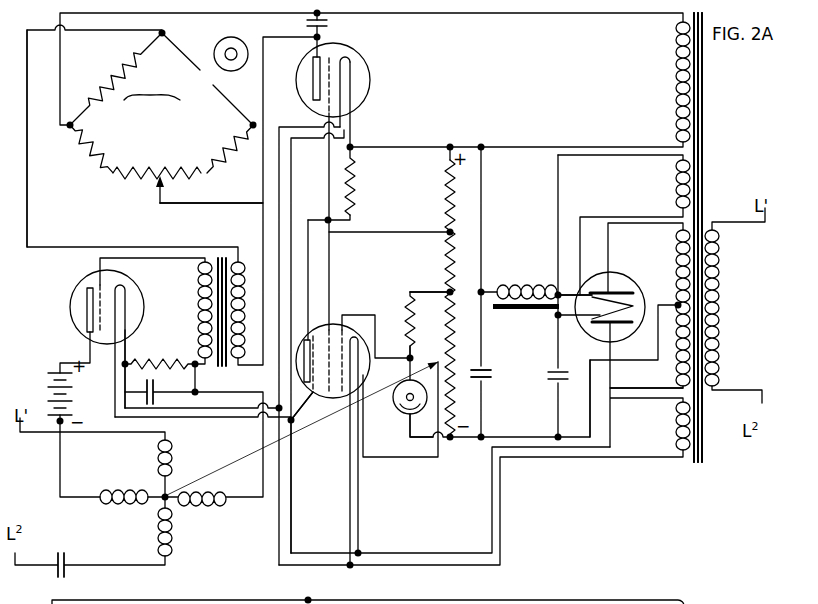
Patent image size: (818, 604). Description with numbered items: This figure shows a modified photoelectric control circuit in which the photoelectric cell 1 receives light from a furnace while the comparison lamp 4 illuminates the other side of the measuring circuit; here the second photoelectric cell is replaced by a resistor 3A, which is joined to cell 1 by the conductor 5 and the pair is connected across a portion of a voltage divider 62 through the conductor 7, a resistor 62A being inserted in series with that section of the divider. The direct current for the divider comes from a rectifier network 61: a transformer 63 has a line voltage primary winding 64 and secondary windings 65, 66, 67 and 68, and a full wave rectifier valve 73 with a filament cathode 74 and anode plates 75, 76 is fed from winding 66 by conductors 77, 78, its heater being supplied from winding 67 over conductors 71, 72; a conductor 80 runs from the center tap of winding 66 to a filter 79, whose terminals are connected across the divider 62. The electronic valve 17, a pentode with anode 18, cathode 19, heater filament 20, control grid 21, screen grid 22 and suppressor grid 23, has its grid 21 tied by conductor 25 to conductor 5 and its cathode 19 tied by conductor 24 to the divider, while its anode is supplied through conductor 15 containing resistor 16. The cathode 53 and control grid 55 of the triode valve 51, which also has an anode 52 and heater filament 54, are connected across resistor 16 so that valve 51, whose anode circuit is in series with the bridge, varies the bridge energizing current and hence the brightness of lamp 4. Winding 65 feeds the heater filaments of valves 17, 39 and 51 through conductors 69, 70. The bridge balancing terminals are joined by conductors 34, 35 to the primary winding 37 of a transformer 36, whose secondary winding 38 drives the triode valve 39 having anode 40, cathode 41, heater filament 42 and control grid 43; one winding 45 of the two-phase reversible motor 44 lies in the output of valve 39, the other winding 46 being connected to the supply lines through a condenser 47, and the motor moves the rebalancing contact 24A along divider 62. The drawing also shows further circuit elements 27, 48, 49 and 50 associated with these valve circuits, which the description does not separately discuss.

The photoelectric cell 1 is at (392, 404).
The resistor 3A is at (406, 316).
The lamp 4 is at (215, 44).
The conductor 5 is at (415, 362).
The conductor 7 is at (410, 438).
The conductor 15 is at (326, 219).
The resistor 16 is at (356, 190).
The electronic valve 17 is at (366, 384).
The anode 18 is at (310, 395).
The cathode 19 is at (376, 352).
The heater filament 20 is at (338, 415).
The control grid 21 is at (335, 320).
The screen grid 22 is at (322, 398).
The suppressor grid 23 is at (318, 332).
The conductor 24 is at (406, 458).
The rebalancing contact 24A is at (440, 345).
The conductor 25 is at (360, 318).
The condenser 27 is at (330, 24).
The conductor 34 is at (27, 222).
The conductor 35 is at (196, 204).
The transformer 36 is at (226, 370).
The primary winding 37 is at (240, 262).
The secondary winding 38 is at (198, 292).
The electronic valve 39 is at (72, 318).
The anode 40 is at (86, 294).
The cathode 41 is at (130, 326).
The heater filament 42 is at (121, 286).
The control grid 43 is at (98, 280).
The two-phase reversible electrical motor 44 is at (142, 472).
The motor winding 45 is at (120, 505).
The motor winding 46 is at (172, 538).
The condenser 47 is at (62, 560).
The battery 48 is at (45, 386).
The grid resistor 49 is at (152, 362).
The condenser 50 is at (150, 384).
The electronic valve 51 is at (368, 98).
The anode 52 is at (310, 68).
The cathode 53 is at (353, 80).
The heater filament 54 is at (347, 55).
The control grid 55 is at (326, 108).
The rectifier network 61 is at (660, 250).
The voltage divider 62 is at (445, 256).
The resistor 62A is at (445, 358).
The transformer 63 is at (703, 196).
The line voltage primary winding 64 is at (720, 262).
The secondary winding 65 is at (676, 432).
The secondary winding 66 is at (676, 272).
The secondary winding 67 is at (676, 177).
The secondary winding 68 is at (676, 78).
The conductor 69 is at (412, 555).
The conductor 70 is at (404, 566).
The conductor 71 is at (556, 182).
The conductor 72 is at (592, 217).
The rectifier valve 73 is at (582, 327).
The filament cathode 74 is at (636, 302).
The anode plate 75 is at (602, 290).
The anode plate 76 is at (622, 334).
The conductor 77 is at (606, 240).
The conductor 78 is at (628, 388).
The filter 79 is at (542, 268).
The conductor 80 is at (590, 400).